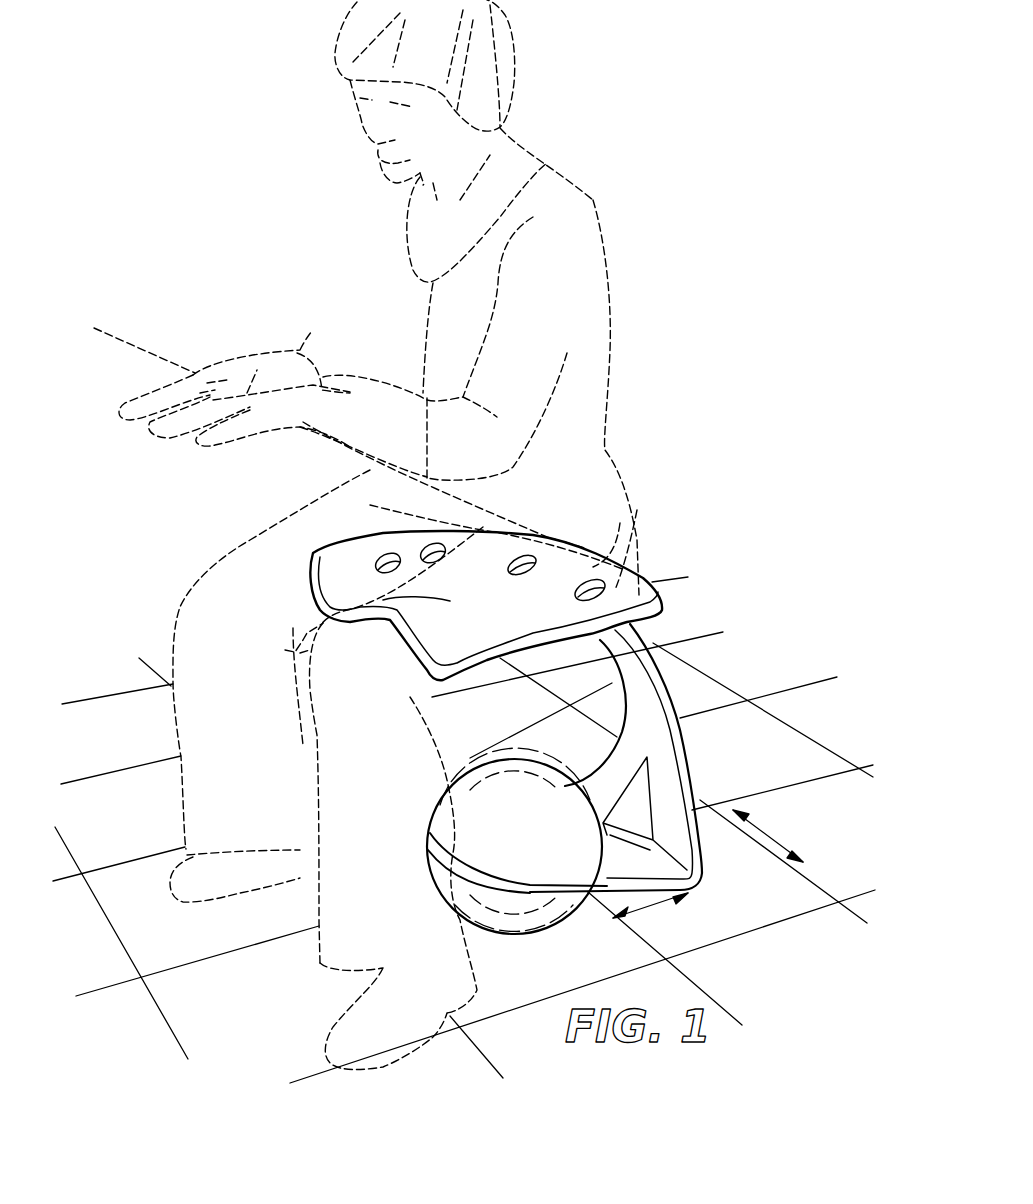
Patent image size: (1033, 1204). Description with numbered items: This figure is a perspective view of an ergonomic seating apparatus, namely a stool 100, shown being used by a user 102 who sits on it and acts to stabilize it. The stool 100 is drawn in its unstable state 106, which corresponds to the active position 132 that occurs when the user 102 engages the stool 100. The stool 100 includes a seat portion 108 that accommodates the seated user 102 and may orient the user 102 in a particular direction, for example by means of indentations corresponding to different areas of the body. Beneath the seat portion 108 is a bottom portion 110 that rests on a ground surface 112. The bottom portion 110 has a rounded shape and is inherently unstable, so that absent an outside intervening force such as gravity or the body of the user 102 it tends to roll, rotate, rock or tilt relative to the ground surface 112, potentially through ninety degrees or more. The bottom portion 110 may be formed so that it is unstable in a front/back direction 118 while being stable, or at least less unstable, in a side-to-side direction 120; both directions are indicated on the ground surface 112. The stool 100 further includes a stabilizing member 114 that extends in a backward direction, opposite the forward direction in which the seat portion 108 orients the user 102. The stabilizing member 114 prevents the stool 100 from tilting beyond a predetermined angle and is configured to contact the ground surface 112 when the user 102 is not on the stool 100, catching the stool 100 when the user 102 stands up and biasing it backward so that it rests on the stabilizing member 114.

The stool 100 is at (573, 753).
The user 102 is at (588, 200).
The unstable state 106 is at (644, 741).
The seat portion 108 is at (647, 577).
The bottom portion 110 is at (537, 912).
The ground surface 112 is at (109, 694).
The stabilizing member 114 is at (693, 767).
The front/back direction 118 is at (650, 908).
The side-to-side direction 120 is at (772, 833).
The active position 132 is at (680, 670).